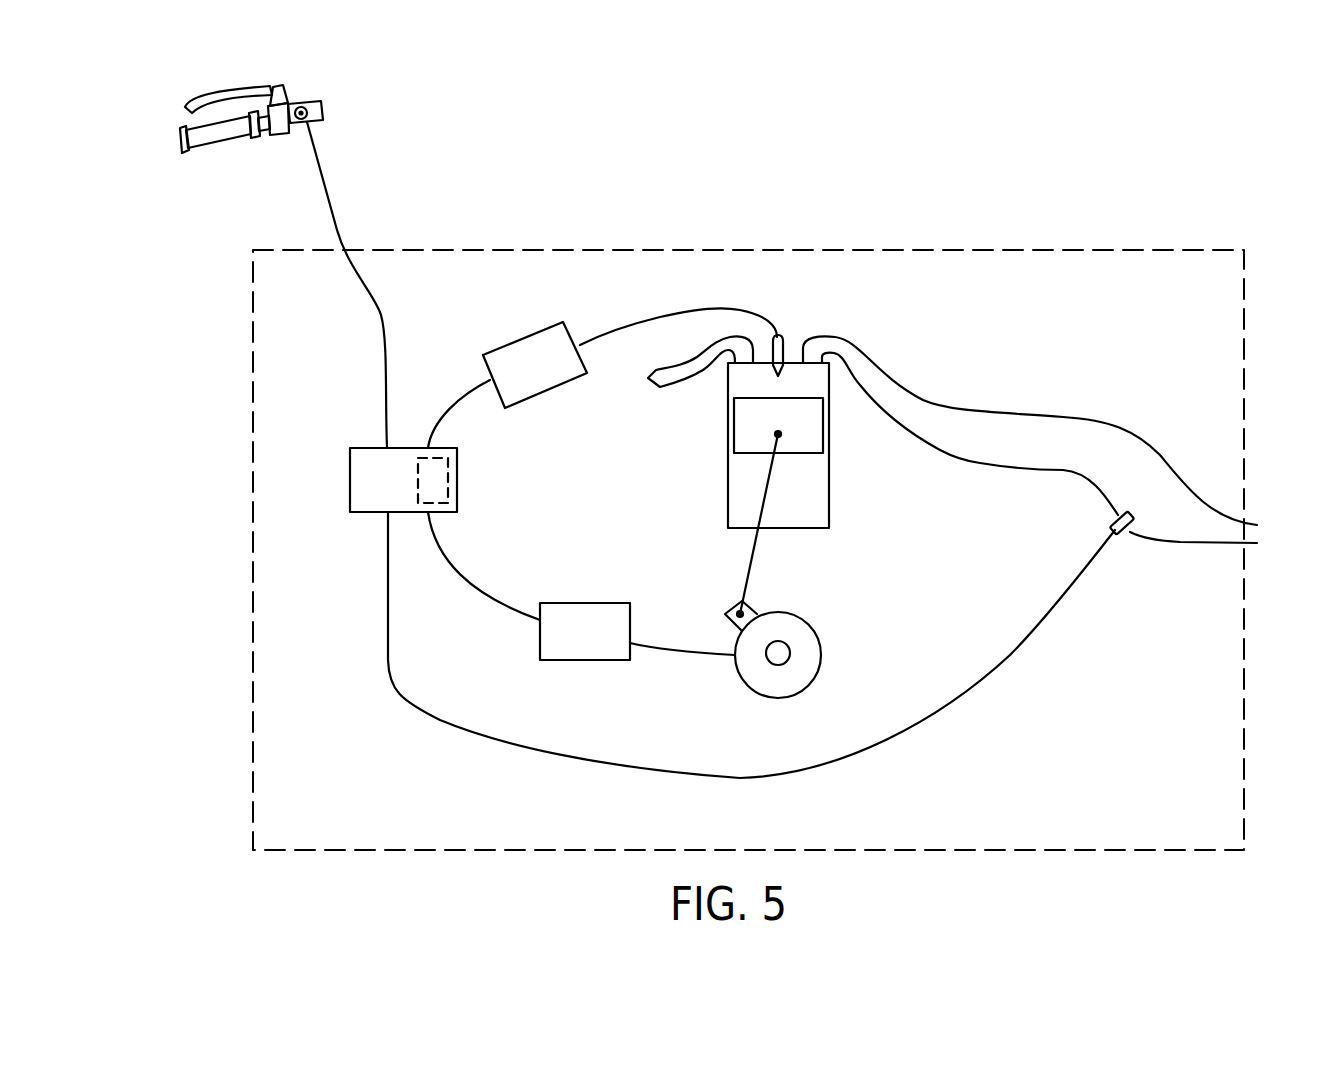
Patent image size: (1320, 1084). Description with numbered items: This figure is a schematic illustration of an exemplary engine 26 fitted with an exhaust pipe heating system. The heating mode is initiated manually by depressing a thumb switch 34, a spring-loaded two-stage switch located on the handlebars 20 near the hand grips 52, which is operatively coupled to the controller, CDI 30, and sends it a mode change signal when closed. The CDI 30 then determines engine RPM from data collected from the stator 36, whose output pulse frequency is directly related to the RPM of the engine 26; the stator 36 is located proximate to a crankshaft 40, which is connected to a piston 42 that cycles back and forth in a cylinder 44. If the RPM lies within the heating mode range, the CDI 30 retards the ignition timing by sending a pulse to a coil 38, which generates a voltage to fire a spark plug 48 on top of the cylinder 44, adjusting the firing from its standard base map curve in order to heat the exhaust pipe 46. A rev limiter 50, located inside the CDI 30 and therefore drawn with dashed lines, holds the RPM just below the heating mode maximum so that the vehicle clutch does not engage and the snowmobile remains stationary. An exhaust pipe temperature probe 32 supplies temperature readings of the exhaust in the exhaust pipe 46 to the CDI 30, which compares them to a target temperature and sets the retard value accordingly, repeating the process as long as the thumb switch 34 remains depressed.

The handlebars 20 is at (322, 122).
The engine 26 is at (587, 250).
The CDI 30 is at (350, 478).
The exhaust pipe temperature probe 32 is at (1127, 535).
The thumb switch 34 is at (301, 105).
The stator 36 is at (580, 662).
The coil 38 is at (518, 337).
The crankshaft 40 is at (788, 645).
The piston 42 is at (732, 436).
The cylinder 44 is at (831, 500).
The exhaust pipe 46 is at (1063, 415).
The spark plug 48 is at (784, 345).
The rev limiter 50 is at (448, 472).
The hand grips 52 is at (210, 145).